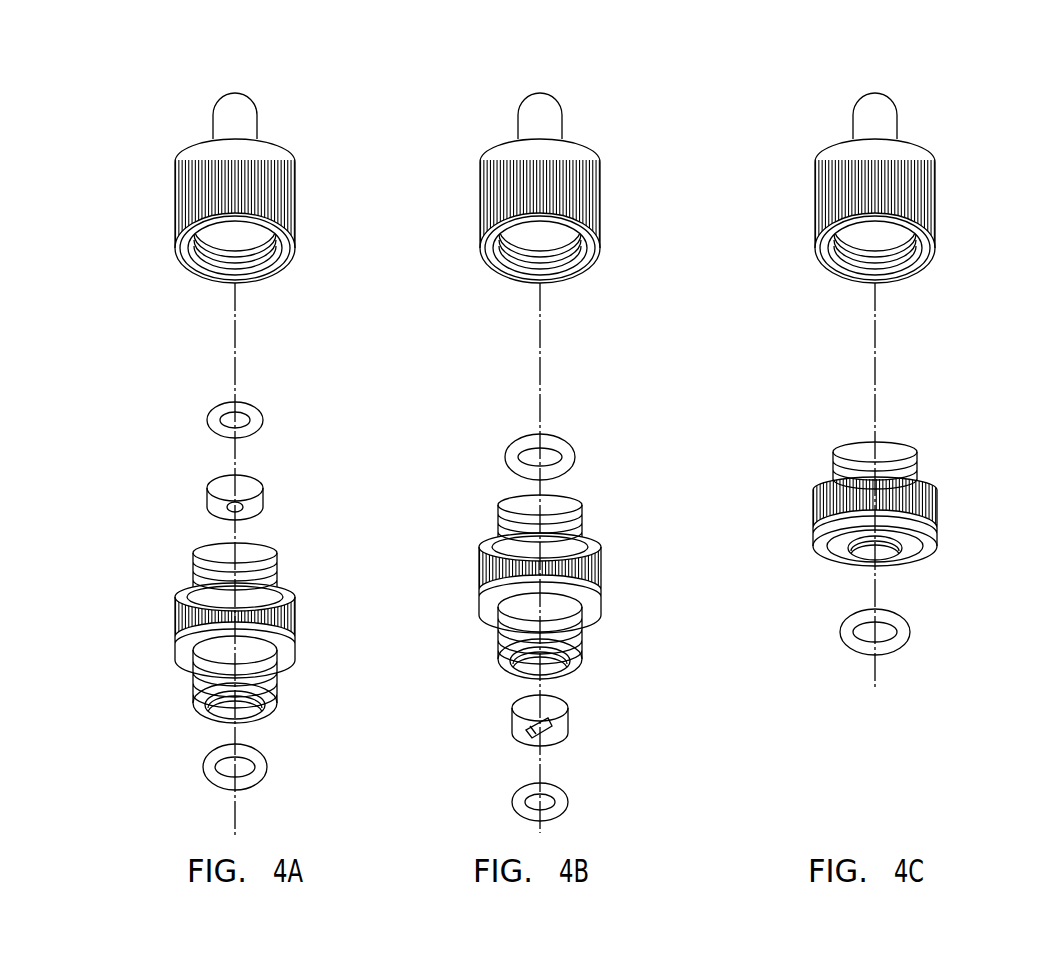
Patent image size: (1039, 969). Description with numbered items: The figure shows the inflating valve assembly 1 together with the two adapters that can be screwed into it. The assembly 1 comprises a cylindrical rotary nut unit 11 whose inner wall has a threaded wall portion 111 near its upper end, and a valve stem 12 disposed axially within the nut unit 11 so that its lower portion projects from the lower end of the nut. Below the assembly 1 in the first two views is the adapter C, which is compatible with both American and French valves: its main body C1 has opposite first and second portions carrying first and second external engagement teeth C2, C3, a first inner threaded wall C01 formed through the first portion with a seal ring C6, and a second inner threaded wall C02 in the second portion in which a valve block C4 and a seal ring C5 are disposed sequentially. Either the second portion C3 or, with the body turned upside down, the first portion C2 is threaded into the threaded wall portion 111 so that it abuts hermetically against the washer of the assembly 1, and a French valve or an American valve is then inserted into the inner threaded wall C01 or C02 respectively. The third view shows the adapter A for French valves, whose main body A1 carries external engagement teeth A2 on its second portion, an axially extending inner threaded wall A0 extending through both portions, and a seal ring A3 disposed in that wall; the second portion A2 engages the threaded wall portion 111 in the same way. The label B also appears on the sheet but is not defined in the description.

In FIG. 4A, the inflating valve assembly 1 is at (72, 158).
In FIG. 4B, the inflating valve assembly 1 is at (539, 200).
In FIG. 4C, the inflating valve assembly 1 is at (874, 200).
In FIG. 4A, the rotary nut unit 11 is at (182, 211).
In FIG. 4B, the rotary nut unit 11 is at (487, 211).
In FIG. 4C, the rotary nut unit 11 is at (874, 211).
In FIG. 4A, the valve stem 12 is at (277, 116).
In FIG. 4B, the valve stem 12 is at (582, 116).
In FIG. 4C, the valve stem 12 is at (917, 116).
In FIG. 4A, the threaded wall portion 111 is at (205, 268).
In FIG. 4B, the threaded wall portion 111 is at (510, 268).
In FIG. 4C, the threaded wall portion 111 is at (845, 268).
In FIG. 4A, the adapter C is at (217, 635).
In FIG. 4B, the adapter C is at (517, 592).
In FIG. 4A, the main body C1 is at (265, 630).
In FIG. 4A, the first external engagement teeth C2 is at (274, 679).
In FIG. 4B, the first external engagement teeth C2 is at (566, 507).
In FIG. 4A, the second external engagement teeth C3 is at (261, 557).
In FIG. 4B, the second external engagement teeth C3 is at (579, 636).
In FIG. 4A, the valve block C4 is at (263, 486).
In FIG. 4B, the valve block C4 is at (576, 720).
In FIG. 4A, the seal ring C5 is at (263, 410).
In FIG. 4B, the seal ring C5 is at (574, 802).
In FIG. 4A, the seal ring C6 is at (270, 767).
In FIG. 4B, the seal ring C6 is at (569, 454).
In FIG. 4A, the first inner threaded wall C01 is at (205, 718).
In FIG. 4B, the second inner threaded wall C02 is at (506, 680).
In FIG. 4C, the adapter A is at (857, 511).
In FIG. 4C, the inner threaded wall A0 is at (846, 568).
In FIG. 4C, the main body A1 is at (905, 520).
In FIG. 4C, the external engagement teeth A2 is at (897, 455).
In FIG. 4C, the seal ring A3 is at (909, 632).
In FIG. 4C, the adapter B is at (1031, 460).